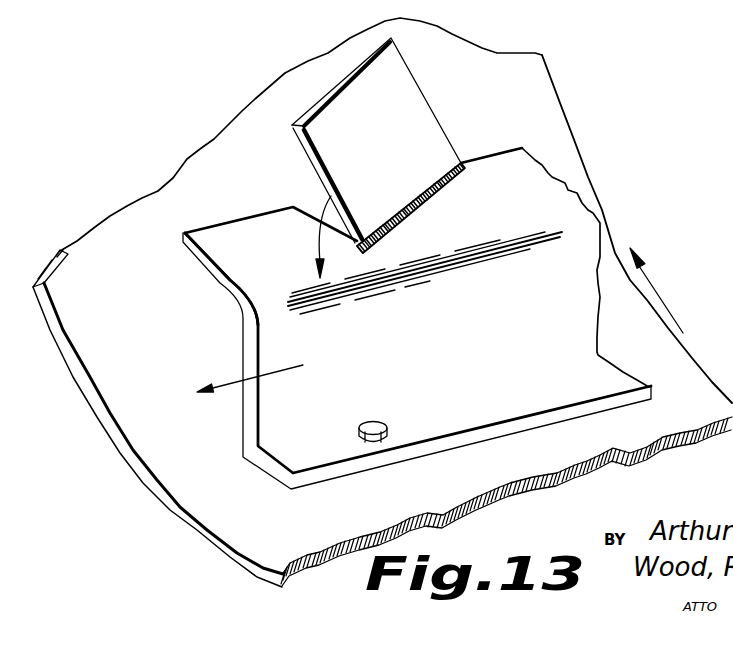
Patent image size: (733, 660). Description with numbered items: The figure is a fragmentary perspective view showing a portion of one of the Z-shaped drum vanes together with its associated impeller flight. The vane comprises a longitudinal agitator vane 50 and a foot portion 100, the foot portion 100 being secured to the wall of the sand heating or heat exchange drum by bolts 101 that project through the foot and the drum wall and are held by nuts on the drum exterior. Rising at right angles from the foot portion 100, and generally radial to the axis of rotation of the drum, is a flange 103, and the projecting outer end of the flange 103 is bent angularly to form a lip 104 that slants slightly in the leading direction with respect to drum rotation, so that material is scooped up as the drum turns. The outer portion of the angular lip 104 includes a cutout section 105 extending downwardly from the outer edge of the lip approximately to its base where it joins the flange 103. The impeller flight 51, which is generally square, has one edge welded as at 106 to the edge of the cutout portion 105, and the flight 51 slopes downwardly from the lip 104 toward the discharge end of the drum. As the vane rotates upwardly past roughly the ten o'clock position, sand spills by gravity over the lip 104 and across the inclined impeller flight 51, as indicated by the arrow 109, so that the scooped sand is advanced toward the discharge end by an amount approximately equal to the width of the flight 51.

The longitudinal agitator vane 50 is at (550, 305).
The impeller flight 51 is at (333, 153).
The foot portion 100 is at (514, 408).
The bolt 101 is at (375, 423).
The flange 103 is at (290, 393).
The angular lip 104 is at (227, 258).
The cutout section 105 is at (332, 185).
The weld 106 is at (432, 195).
The arrow 109 is at (317, 237).